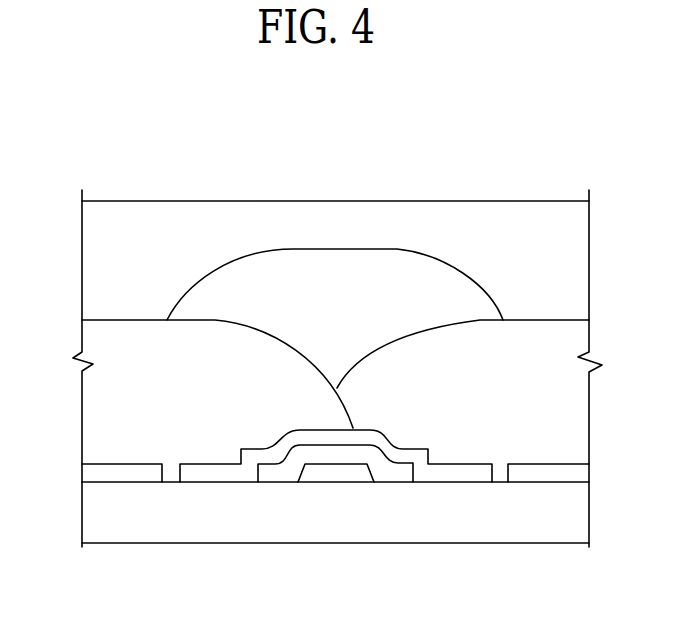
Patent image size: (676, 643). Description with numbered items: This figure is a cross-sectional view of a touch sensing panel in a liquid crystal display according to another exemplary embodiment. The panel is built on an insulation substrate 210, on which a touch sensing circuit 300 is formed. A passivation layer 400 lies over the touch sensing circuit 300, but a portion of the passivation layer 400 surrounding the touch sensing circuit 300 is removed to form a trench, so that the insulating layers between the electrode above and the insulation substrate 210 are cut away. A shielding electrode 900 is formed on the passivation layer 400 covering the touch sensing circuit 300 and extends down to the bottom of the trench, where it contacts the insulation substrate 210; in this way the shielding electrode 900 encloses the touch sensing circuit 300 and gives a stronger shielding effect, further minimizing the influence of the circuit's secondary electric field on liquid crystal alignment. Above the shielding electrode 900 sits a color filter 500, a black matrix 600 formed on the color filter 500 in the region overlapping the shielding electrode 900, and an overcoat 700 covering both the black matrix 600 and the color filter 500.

The insulation substrate 210 is at (145, 513).
The touch sensing circuit 300 is at (331, 473).
The passivation layer 400 is at (397, 475).
The shielding electrode 900 is at (225, 473).
The color filter 500 is at (137, 333).
The black matrix 600 is at (290, 273).
The overcoat 700 is at (497, 238).